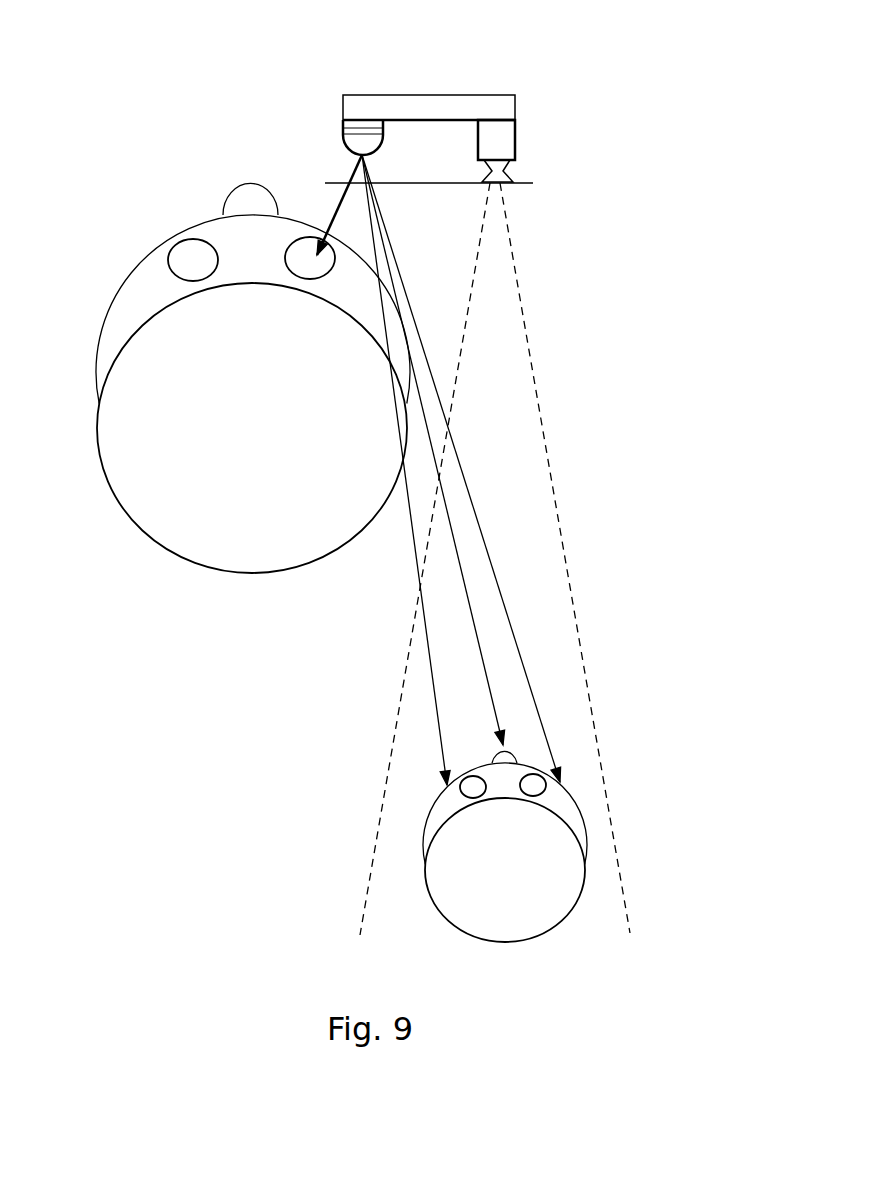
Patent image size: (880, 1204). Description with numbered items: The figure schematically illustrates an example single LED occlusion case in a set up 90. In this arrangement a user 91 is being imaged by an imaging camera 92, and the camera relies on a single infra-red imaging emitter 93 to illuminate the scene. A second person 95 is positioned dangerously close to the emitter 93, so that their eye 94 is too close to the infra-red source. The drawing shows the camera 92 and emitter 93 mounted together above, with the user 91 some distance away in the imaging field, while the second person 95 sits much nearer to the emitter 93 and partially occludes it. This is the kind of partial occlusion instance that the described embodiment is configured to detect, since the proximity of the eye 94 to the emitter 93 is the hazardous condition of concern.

The single LED occlusion set up 90 is at (128, 80).
The user 91 is at (420, 810).
The imaging camera 92 is at (522, 125).
The infra-red imaging emitter 93 is at (340, 82).
The eye 94 is at (298, 203).
The second person 95 is at (222, 333).